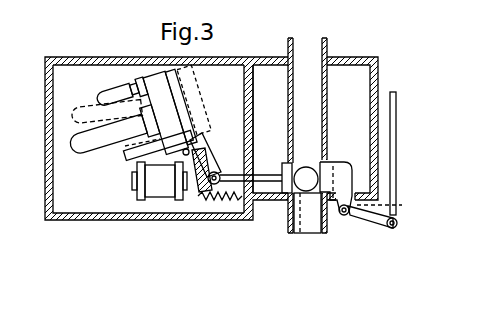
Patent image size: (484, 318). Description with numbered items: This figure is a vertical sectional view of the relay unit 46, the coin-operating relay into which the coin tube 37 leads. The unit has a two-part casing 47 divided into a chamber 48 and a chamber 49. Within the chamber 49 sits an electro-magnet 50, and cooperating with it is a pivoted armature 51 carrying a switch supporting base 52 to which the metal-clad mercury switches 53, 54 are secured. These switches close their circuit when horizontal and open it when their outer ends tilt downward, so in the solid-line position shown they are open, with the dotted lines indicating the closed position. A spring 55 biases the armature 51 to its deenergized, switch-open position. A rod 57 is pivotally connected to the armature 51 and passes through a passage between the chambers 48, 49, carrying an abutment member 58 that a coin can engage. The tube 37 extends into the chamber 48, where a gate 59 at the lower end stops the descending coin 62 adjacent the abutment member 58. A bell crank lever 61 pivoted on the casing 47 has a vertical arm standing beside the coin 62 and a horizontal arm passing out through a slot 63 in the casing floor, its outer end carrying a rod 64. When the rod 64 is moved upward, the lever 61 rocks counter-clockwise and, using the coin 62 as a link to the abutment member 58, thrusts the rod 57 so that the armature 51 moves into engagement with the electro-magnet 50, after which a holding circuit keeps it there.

The coin tube 37 is at (327, 56).
The relay unit 46 is at (241, 49).
The two-part casing 47 is at (349, 60).
The chamber 48 is at (358, 105).
The chamber 49 is at (237, 110).
The electro-magnet 50 is at (140, 183).
The pivoted armature 51 is at (201, 148).
The switch supporting base 52 is at (164, 98).
The mercury switch 53 is at (82, 143).
The mercury switch 54 is at (117, 93).
The spring 55 is at (226, 200).
The rod 57 is at (261, 174).
The abutment member 58 is at (284, 206).
The gate 59 is at (310, 197).
The bell crank lever 61 is at (381, 229).
The coin 62 is at (302, 174).
The slot 63 is at (352, 213).
The rod 64 is at (397, 114).